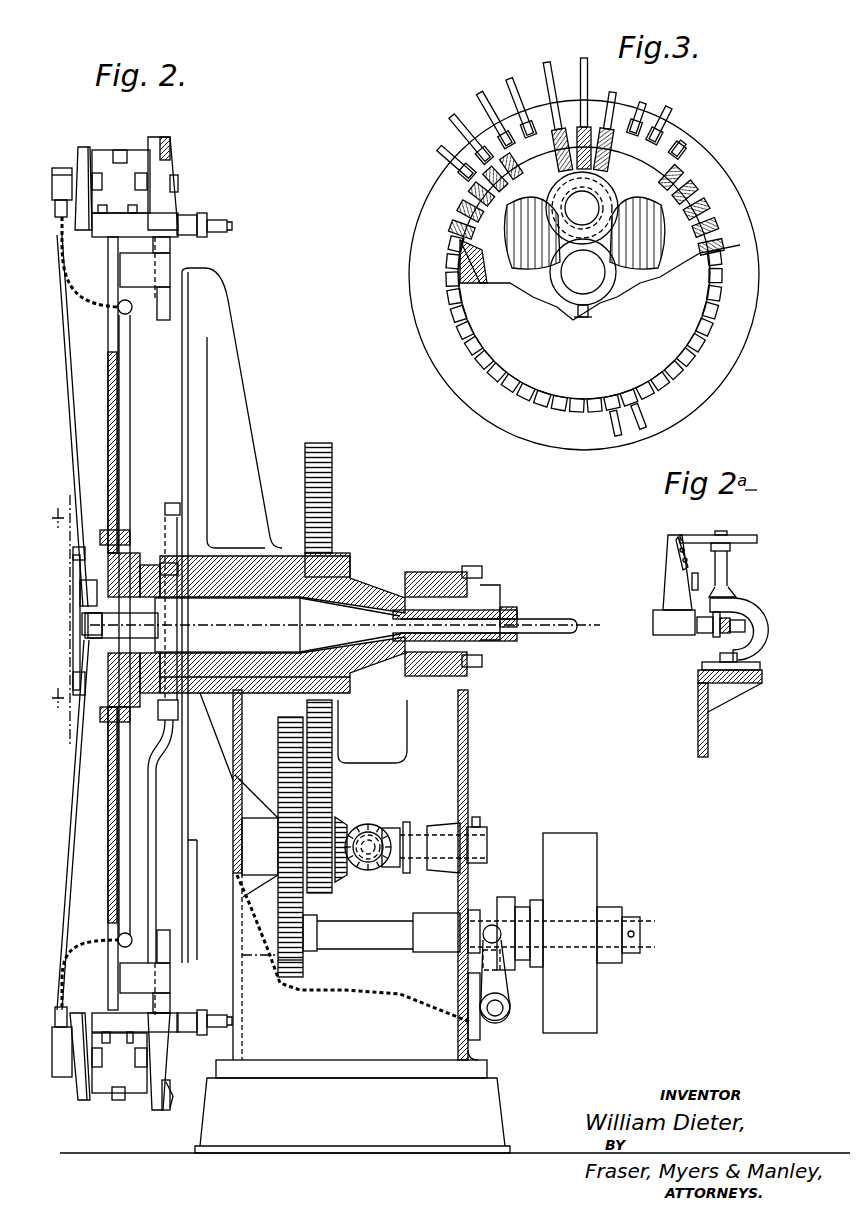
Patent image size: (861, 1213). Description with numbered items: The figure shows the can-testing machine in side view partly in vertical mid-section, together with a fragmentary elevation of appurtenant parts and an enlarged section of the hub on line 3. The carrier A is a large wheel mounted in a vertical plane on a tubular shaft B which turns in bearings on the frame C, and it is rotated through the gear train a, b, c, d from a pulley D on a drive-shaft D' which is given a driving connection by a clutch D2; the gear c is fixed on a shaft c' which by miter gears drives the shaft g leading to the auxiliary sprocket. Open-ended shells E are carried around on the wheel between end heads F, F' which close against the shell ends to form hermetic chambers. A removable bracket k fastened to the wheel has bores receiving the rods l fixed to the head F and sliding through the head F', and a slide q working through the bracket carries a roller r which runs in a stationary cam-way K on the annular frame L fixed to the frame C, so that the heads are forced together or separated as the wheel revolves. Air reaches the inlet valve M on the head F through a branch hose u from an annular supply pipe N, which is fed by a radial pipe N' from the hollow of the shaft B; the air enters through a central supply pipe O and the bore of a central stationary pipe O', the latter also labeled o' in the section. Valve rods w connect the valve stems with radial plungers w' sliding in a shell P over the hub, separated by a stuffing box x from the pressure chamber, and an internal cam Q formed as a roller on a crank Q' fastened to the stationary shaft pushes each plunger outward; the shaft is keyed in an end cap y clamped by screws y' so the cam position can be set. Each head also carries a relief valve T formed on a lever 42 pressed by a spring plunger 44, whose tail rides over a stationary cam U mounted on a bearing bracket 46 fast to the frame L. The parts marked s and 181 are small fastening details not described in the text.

In FIG. 2, the frame C is at (352, 921).
In FIG. 2, the tubular shaft B is at (350, 672).
In FIG. 2, the end cap y is at (462, 583).
In FIG. 2, the screws y' is at (461, 642).
In FIG. 2, the central stationary pipe o' is at (345, 583).
In FIG. 2, the central supply pipe O is at (485, 615).
In FIG. 2, the gear d is at (333, 456).
In FIG. 2, the gear b is at (289, 841).
In FIG. 2, the gear a is at (311, 973).
In FIG. 2, the gear c is at (341, 834).
In FIG. 2, the shaft c' is at (416, 827).
In FIG. 2, the shaft g is at (368, 860).
In FIG. 2, the drive-shaft D' is at (486, 938).
In FIG. 2, the clutch D2 is at (505, 952).
In FIG. 2, the pulley D is at (591, 933).
In FIG. 2, the annular frame L is at (183, 417).
In FIG. 2A, the annular frame L is at (708, 740).
In FIG. 2, the cam-way K is at (165, 508).
In FIG. 2, the radial pipe N' is at (124, 841).
In FIG. 2, the carrier A is at (108, 380).
In FIG. 2, the annular supply pipe N is at (135, 625).
In FIG. 2, the branch pipe or hose u is at (100, 308).
In FIG. 2, the roller r is at (163, 320).
In FIG. 2, the valve rod w is at (64, 622).
In FIG. 3, the valve rod w is at (561, 256).
In FIG. 2, the end head F is at (67, 620).
In FIG. 2, the open-ended shell E is at (140, 157).
In FIG. 2, the end head F' is at (177, 623).
In FIG. 2A, the end head F' is at (665, 585).
In FIG. 2, the rod l is at (185, 222).
In FIG. 2, the bracket k is at (120, 265).
In FIG. 2, the slide q is at (170, 245).
In FIG. 2, the inlet valve M is at (55, 188).
In FIG. 2, the screw s is at (117, 1041).
In FIG. 2, the contact 181 is at (115, 1100).
In FIG. 2, the spring plunger 44 is at (158, 1108).
In FIG. 2A, the spring plunger 44 is at (678, 538).
In FIG. 2, the lever 42 is at (171, 1102).
In FIG. 2A, the lever 42 is at (688, 540).
In FIG. 2, the stuffing box x is at (140, 600).
In FIG. 2, the shell P is at (70, 658).
In FIG. 3, the shell P is at (700, 268).
In FIG. 2, the radial plunger w' is at (62, 615).
In FIG. 3, the radial plunger w' is at (580, 184).
In FIG. 2, the segment or crank Q' is at (67, 589).
In FIG. 3, the segment or crank Q' is at (637, 253).
In FIG. 2, the internal cam Q is at (70, 618).
In FIG. 3, the internal cam Q is at (510, 249).
In FIG. 2, the section line 3 is at (58, 602).
In FIG. 3, the central stationary pipe O' is at (583, 253).
In FIG. 2A, the cam U is at (757, 539).
In FIG. 2A, the bearing bracket 46 is at (765, 617).
In FIG. 2A, the relief valve T is at (680, 565).